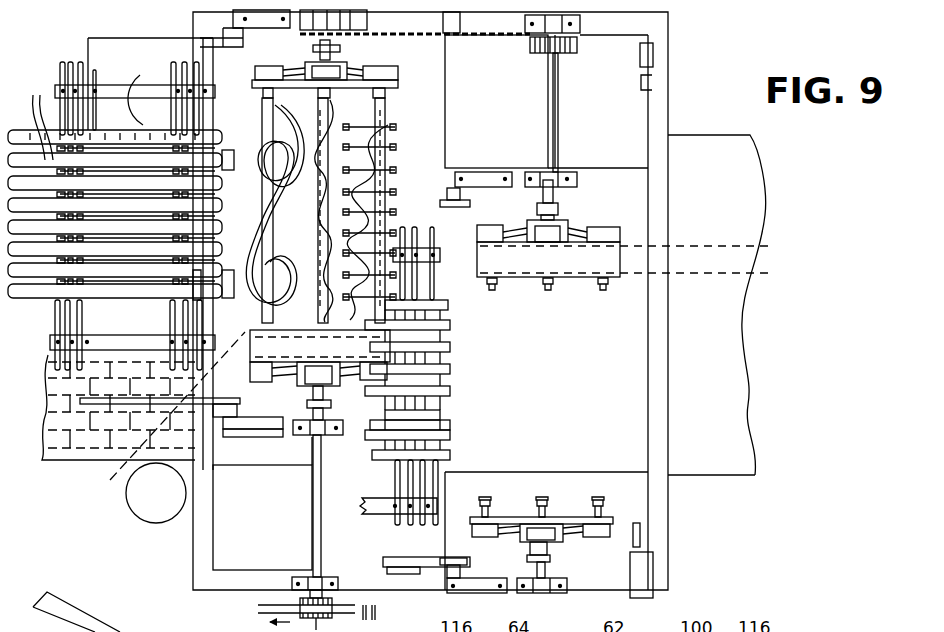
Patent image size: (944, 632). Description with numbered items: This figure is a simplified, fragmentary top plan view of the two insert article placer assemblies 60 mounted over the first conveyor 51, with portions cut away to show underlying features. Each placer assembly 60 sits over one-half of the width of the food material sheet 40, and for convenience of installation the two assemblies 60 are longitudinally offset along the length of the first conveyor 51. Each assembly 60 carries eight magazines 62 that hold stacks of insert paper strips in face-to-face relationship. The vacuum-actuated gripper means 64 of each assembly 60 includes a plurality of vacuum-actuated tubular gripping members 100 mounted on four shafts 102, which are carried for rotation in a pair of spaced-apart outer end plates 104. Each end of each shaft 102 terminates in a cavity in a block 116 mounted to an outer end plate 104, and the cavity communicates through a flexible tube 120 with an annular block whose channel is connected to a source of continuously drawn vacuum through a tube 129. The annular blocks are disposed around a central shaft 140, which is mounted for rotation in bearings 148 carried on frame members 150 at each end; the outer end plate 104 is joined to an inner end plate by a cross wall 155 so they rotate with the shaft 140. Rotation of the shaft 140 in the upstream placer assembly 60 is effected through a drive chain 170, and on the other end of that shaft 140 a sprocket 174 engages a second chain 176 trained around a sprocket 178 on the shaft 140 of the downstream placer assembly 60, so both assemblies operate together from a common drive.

The food material sheet 40 is at (62, 455).
The first conveyor 51 is at (712, 478).
The insert article placer assembly 60 is at (162, 62).
The magazine 62 is at (480, 347).
The vacuum-actuated gripper means 64 is at (240, 73).
The vacuum-actuated tubular gripping member 100 is at (321, 211).
The shaft 102 is at (398, 130).
The outer end plate 104 is at (360, 108).
The block 116 is at (235, 62).
The flexible tube 120 is at (287, 45).
The tube 129 is at (447, 425).
The central shaft 140 is at (558, 92).
The bearing 148 is at (578, 22).
The frame member 150 is at (207, 550).
The cross wall 155 is at (282, 355).
The drive chain 170 is at (258, 600).
The sprocket 174 is at (392, 35).
The second chain 176 is at (485, 42).
The sprocket 178 is at (652, 90).